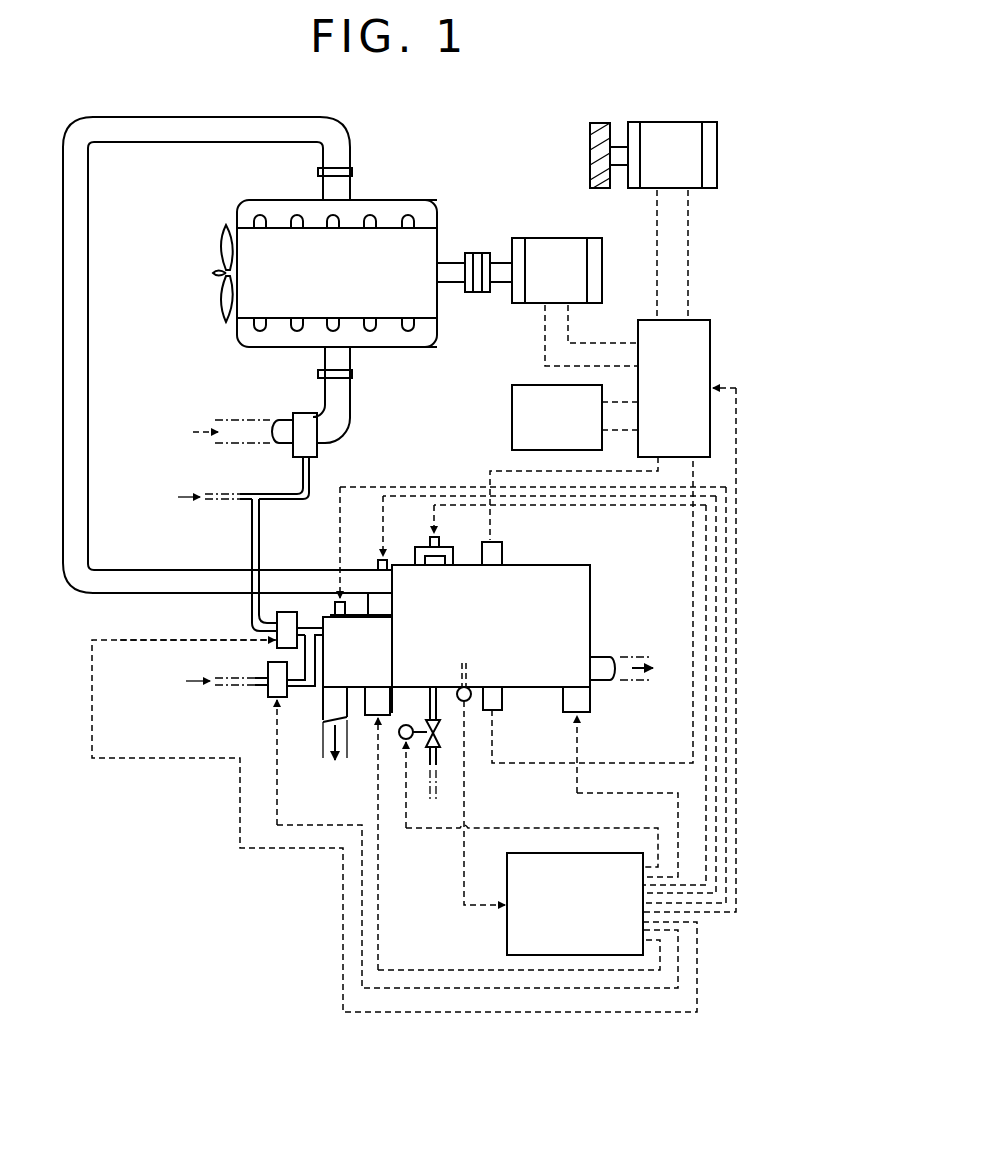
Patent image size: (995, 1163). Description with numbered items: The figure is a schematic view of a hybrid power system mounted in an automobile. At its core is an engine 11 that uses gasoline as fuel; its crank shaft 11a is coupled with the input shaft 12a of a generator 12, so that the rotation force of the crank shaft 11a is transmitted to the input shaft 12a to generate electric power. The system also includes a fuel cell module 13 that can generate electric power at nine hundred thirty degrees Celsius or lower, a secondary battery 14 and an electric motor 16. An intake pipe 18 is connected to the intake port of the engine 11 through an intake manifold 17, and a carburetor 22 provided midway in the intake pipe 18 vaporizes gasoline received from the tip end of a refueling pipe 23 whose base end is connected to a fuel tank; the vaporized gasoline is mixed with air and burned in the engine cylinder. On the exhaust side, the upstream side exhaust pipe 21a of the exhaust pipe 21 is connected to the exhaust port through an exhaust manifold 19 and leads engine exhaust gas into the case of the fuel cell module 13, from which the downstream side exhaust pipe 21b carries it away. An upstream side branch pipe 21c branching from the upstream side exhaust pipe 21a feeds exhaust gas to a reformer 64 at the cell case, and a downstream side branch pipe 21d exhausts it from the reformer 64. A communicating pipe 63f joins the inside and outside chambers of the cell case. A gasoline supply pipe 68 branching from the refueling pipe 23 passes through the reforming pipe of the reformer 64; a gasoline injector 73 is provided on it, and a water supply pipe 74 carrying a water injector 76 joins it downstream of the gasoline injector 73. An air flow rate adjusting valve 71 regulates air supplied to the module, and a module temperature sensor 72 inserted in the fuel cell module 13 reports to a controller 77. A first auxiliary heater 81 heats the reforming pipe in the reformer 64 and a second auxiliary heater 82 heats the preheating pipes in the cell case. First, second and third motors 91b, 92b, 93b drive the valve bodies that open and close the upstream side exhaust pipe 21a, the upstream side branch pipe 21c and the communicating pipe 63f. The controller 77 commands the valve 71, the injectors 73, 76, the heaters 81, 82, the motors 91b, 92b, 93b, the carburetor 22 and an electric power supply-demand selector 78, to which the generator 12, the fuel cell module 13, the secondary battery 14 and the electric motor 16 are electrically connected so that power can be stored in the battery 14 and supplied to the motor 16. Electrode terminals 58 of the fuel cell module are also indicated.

The engine 11 is at (287, 273).
The crank shaft 11a is at (450, 263).
The generator 12 is at (569, 281).
The input shaft 12a is at (497, 263).
The fuel cell module 13 is at (449, 608).
The secondary battery 14 is at (569, 431).
The electric motor 16 is at (684, 163).
The intake manifold 17 is at (402, 347).
The intake pipe 18 is at (351, 430).
The exhaust manifold 19 is at (402, 200).
The exhaust pipe 21 is at (170, 145).
The upstream side exhaust pipe 21a is at (92, 292).
The downstream side exhaust pipe 21b is at (602, 657).
The upstream side branch pipe 21c is at (375, 605).
The downstream side branch pipe 21d is at (325, 700).
The carburetor 22 is at (300, 413).
The refueling pipe 23 is at (312, 490).
The electrode terminals 58 is at (505, 548).
The communicating pipe 63f is at (455, 555).
The reformer 64 is at (369, 658).
The gasoline supply pipe 68 is at (262, 535).
The air flow rate adjusting valve 71 is at (438, 738).
The module temperature sensor 72 is at (466, 668).
The gasoline injector 73 is at (297, 614).
The water supply pipe 74 is at (262, 688).
The water injector 76 is at (262, 700).
The controller 77 is at (507, 925).
The electric power supply-demand selector 78 is at (687, 401).
The first auxiliary heater 81 is at (388, 713).
The second auxiliary heater 82 is at (586, 711).
The first motor 91b is at (427, 545).
The second motor 92b is at (373, 562).
The third motor 93b is at (324, 562).